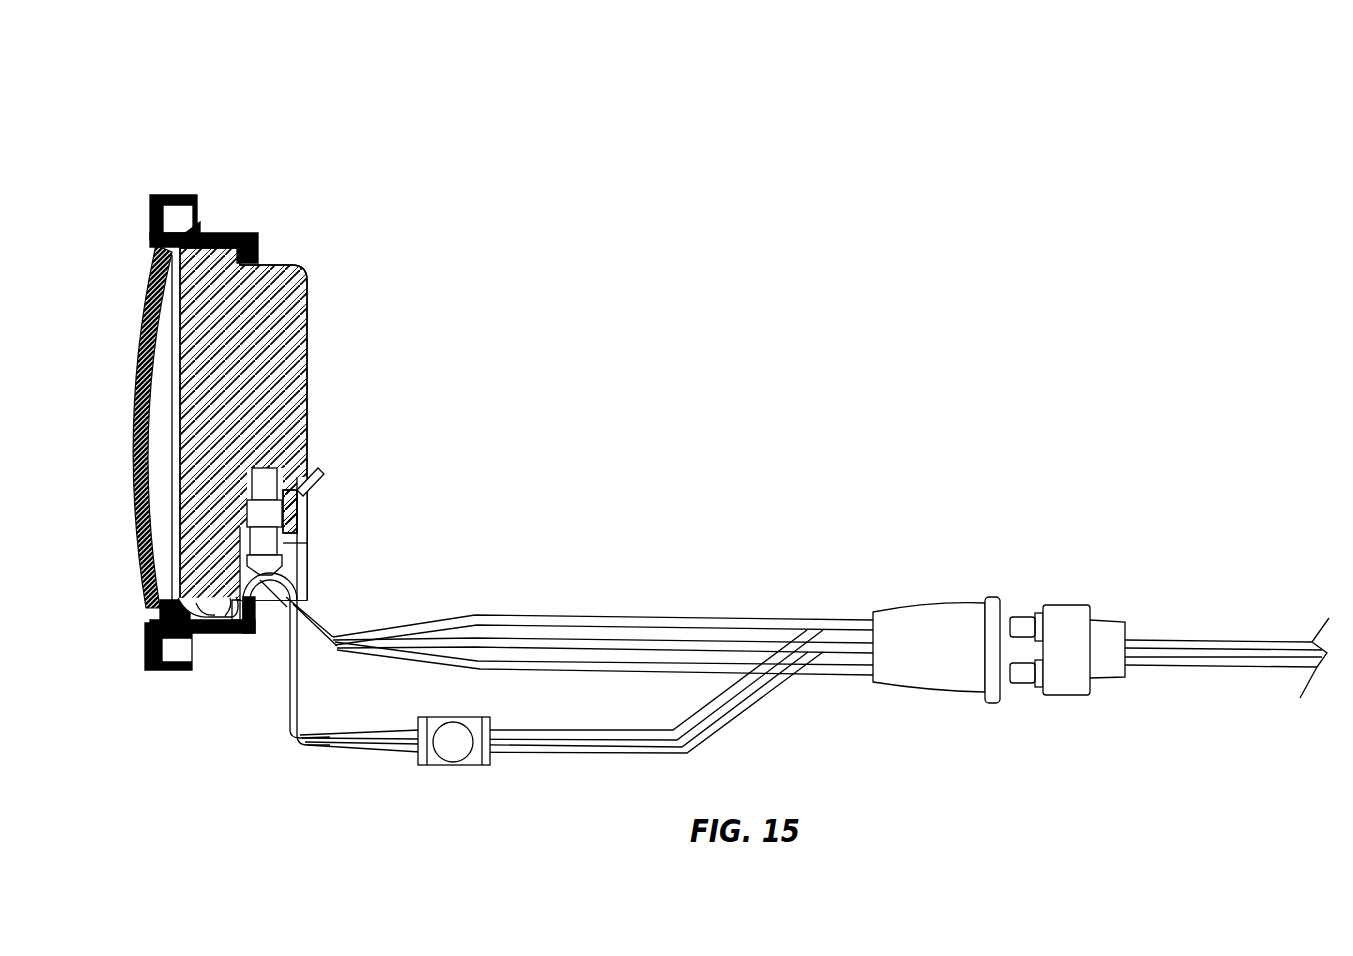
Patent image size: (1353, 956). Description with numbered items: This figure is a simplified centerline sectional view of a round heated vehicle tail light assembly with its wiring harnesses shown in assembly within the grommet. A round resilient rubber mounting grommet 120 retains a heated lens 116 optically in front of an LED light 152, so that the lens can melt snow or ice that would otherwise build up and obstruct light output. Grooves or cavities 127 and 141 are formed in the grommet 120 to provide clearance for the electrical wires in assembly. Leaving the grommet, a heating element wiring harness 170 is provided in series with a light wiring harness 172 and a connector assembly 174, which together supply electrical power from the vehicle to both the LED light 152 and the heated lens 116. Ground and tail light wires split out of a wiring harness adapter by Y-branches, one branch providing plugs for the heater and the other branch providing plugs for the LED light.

The heated lens 116 is at (143, 228).
The mounting grommet 120 is at (247, 232).
The LED light 152 is at (310, 285).
The second inner groove 127 is at (210, 622).
The groove 141 is at (232, 632).
The heating element wiring harness 170 is at (303, 650).
The light wiring harness 172 is at (592, 725).
The connector assembly 174 is at (1072, 604).